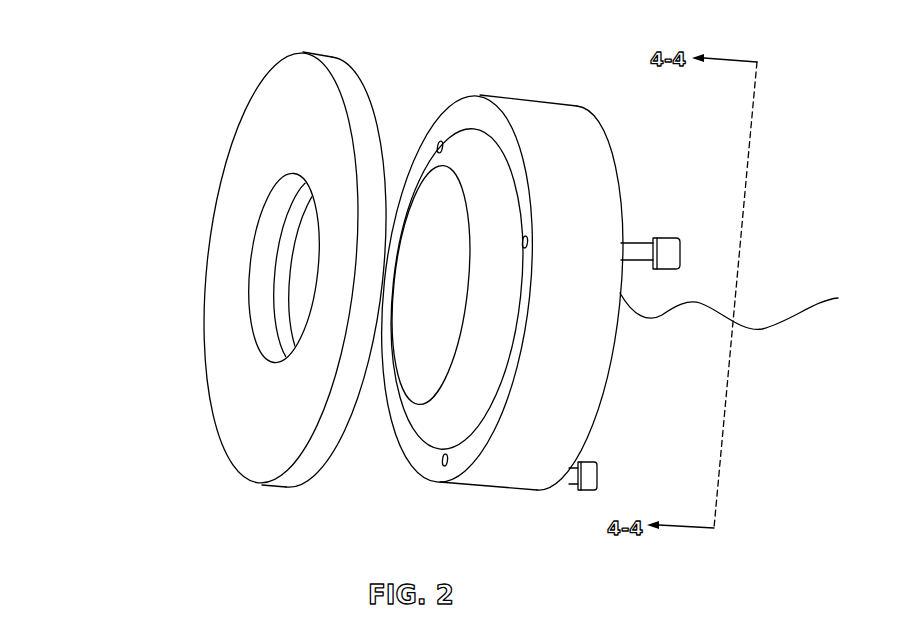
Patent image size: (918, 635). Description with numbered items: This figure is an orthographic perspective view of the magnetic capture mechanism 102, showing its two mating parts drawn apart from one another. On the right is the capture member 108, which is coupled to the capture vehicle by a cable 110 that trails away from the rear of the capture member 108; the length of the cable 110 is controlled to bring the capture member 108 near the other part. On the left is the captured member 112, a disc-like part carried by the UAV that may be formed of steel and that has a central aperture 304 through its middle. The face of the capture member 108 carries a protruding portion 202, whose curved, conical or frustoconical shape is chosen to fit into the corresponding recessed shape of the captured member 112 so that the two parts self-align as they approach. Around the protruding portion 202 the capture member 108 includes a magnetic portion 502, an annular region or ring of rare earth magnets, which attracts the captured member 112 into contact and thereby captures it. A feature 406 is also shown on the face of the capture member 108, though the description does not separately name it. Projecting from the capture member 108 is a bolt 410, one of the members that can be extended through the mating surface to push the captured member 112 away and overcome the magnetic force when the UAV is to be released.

The magnetic capture mechanism 102 is at (190, 50).
The capture member 108 is at (592, 177).
The cable 110 is at (693, 300).
The captured member 112 is at (254, 130).
The protruding portion 202 is at (463, 160).
The central aperture 304 is at (293, 290).
The lens recess 406 is at (515, 284).
The bolts 410 is at (592, 478).
The magnetic portion 502 is at (437, 462).